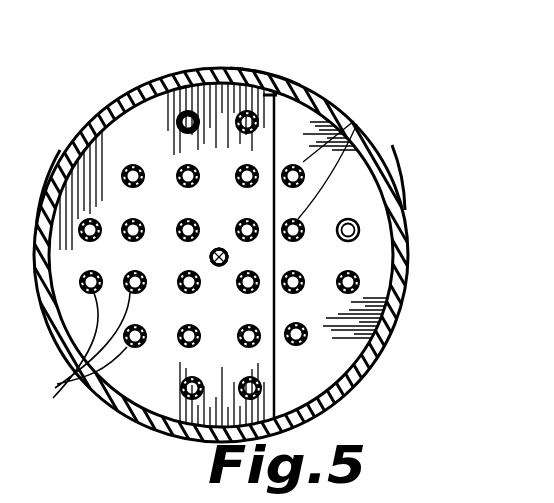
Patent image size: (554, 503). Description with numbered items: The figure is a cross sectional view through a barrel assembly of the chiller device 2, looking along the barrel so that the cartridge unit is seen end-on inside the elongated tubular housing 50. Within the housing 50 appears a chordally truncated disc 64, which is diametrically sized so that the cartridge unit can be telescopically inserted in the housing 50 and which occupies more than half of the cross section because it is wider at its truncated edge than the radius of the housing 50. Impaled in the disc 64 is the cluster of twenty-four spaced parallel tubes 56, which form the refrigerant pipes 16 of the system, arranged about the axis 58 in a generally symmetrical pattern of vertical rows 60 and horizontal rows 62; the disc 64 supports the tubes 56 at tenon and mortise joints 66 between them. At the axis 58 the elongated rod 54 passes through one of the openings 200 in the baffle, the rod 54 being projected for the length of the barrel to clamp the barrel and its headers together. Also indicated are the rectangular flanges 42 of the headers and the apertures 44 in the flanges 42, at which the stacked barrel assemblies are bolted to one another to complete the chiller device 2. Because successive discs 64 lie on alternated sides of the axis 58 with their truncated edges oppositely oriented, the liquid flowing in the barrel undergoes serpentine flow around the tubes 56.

The chiller device 2 is at (68, 286).
The refrigerant pipes 16 is at (177, 170).
The rectangular flanges 42 is at (30, 157).
The apertures 44 is at (277, 367).
The tubular housing 50 is at (391, 172).
The elongated rod 54 is at (226, 232).
The tubes 56 is at (348, 218).
The axis 58 is at (220, 266).
The vertical rows 60 is at (267, 73).
The horizontal rows 62 is at (364, 266).
The chordally truncated discs 64 is at (132, 137).
The tenon and mortise joints 66 is at (88, 358).
The openings 200 is at (228, 256).